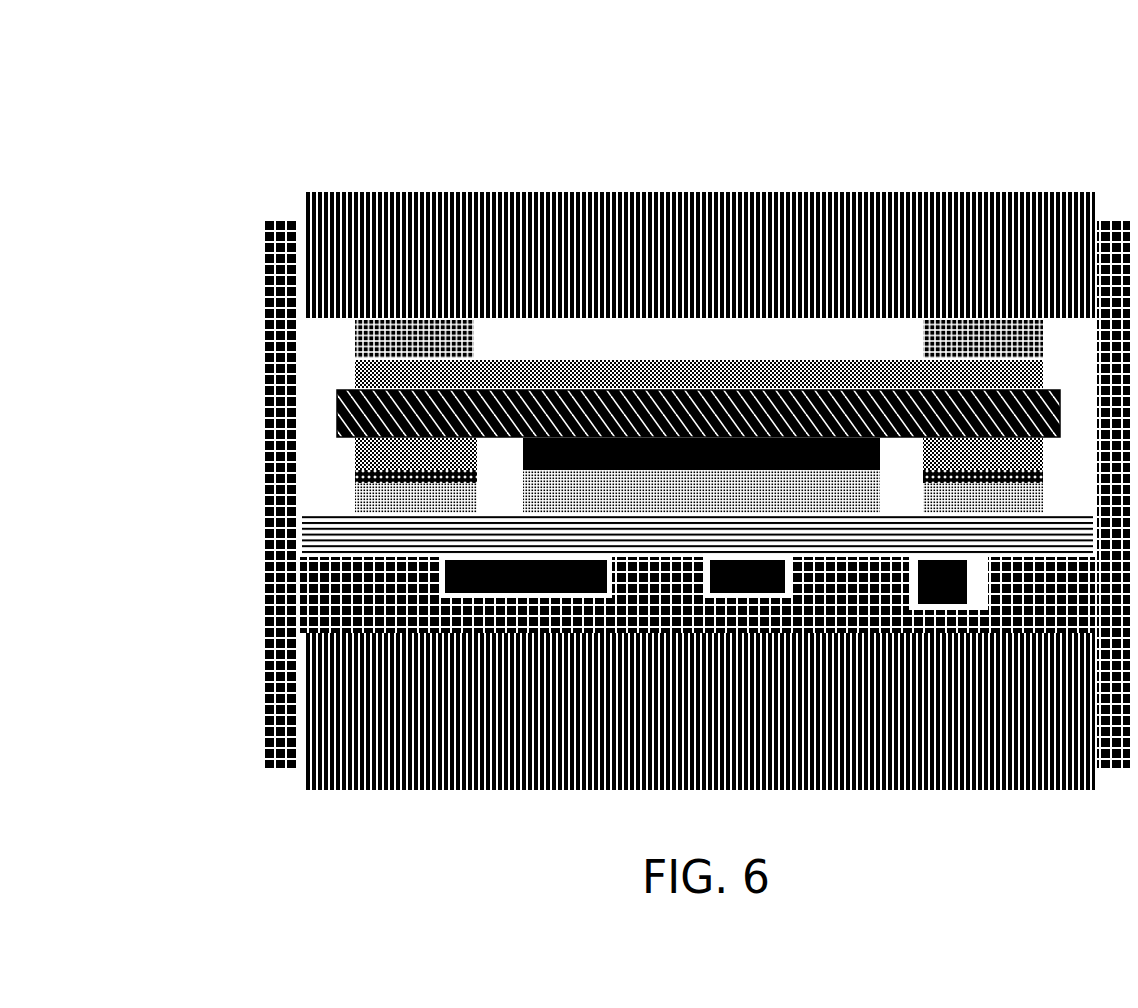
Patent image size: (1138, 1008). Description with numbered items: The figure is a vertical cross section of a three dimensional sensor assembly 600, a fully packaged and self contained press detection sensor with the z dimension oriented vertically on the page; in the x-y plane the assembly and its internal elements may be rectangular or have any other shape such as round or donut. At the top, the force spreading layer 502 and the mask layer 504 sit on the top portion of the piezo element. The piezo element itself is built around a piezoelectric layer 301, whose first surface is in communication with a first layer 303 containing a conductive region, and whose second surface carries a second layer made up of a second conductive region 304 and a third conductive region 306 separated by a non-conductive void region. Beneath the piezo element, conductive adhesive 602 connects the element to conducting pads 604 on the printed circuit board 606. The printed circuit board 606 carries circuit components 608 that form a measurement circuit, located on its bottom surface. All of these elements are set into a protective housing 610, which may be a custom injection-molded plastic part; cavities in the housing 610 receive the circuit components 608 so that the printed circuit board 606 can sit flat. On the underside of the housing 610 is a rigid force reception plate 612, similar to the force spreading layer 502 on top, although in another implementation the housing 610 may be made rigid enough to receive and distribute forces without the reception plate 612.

The sensor assembly 600 is at (683, 68).
The force spreading layer 502 is at (409, 260).
The mask layer 504 is at (409, 350).
The first layer 303 is at (609, 384).
The piezoelectric layer 301 is at (618, 428).
The third conductive region 306 is at (399, 464).
The second conductive region 304 is at (676, 466).
The conductive adhesive 602 is at (338, 476).
The conducting pads 604 is at (338, 498).
The printed circuit board 606 is at (338, 540).
The circuit components 608 is at (506, 586).
The protective housing 610 is at (252, 607).
The force reception plate 612 is at (432, 708).